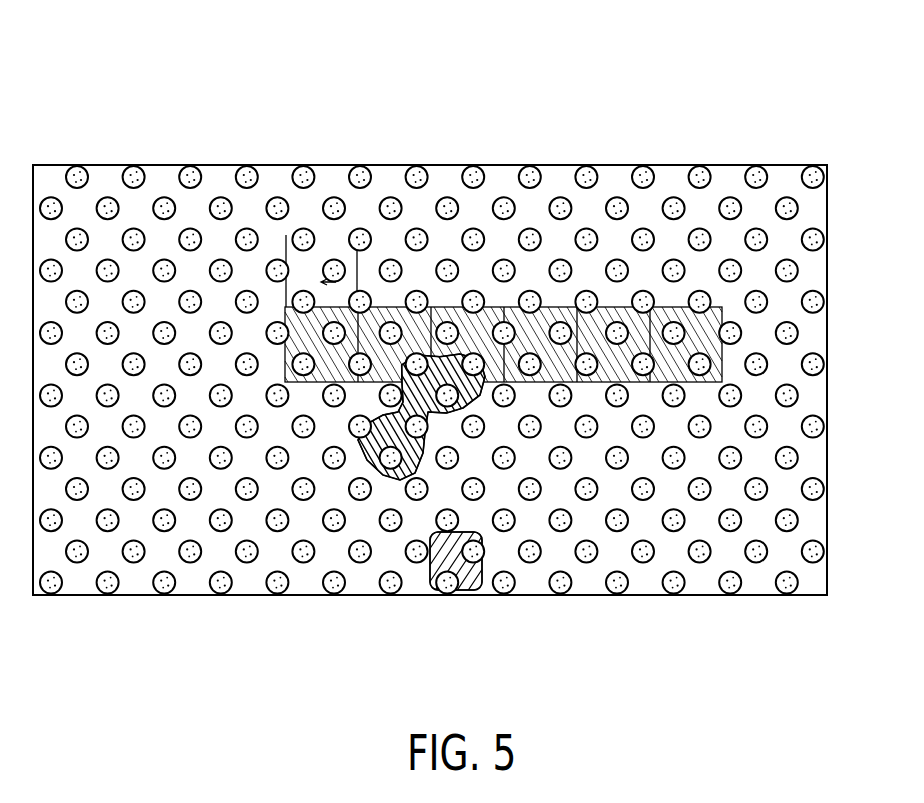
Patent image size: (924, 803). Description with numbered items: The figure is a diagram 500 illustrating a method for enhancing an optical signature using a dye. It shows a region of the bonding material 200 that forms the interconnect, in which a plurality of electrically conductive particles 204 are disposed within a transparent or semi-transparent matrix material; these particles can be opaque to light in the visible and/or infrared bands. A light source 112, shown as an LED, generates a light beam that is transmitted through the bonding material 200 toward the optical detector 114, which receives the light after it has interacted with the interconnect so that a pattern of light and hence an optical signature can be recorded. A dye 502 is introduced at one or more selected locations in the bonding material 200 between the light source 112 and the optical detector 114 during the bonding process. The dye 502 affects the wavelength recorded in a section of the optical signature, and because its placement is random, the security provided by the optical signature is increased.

The diagram 500 is at (472, 343).
The bonding material 200 is at (838, 573).
The optical detector 114 is at (723, 355).
The dye 502 is at (368, 473).
The light source 112 is at (468, 593).
The electrically conductive particles 204 is at (588, 500).